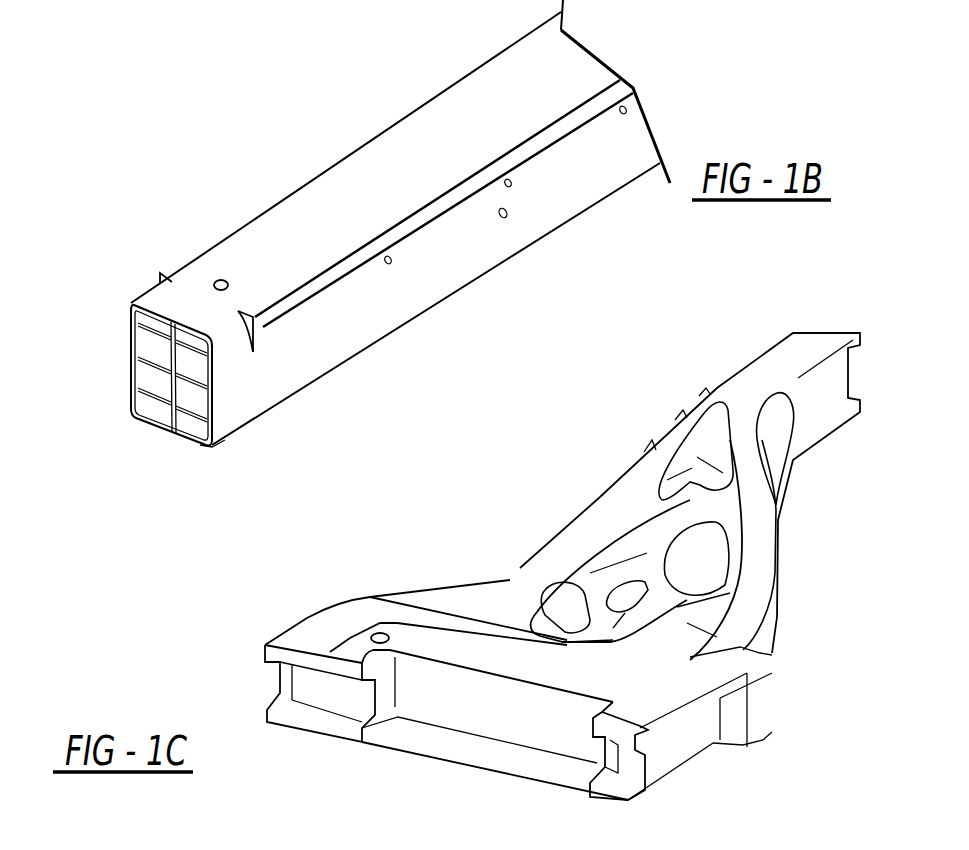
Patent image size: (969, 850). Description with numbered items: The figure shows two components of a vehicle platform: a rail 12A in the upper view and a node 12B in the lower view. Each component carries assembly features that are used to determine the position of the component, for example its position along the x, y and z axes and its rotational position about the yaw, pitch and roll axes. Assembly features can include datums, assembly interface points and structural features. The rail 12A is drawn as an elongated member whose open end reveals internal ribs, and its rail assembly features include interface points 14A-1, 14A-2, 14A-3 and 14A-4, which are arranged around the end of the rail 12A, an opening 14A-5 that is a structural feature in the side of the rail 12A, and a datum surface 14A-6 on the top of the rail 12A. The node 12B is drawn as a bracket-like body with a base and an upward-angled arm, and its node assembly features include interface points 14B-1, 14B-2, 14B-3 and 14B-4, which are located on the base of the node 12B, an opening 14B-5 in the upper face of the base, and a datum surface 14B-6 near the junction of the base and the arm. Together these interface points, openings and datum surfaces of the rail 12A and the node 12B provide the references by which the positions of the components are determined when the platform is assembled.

In FIG. 1B, the rail 12A is at (221, 190).
In FIG. 1B, the interface point 14A-1 is at (129, 299).
In FIG. 1B, the interface point 14A-2 is at (217, 336).
In FIG. 1B, the interface point 14A-3 is at (214, 448).
In FIG. 1B, the interface point 14A-4 is at (129, 414).
In FIG. 1B, the opening 14A-5 is at (219, 280).
In FIG. 1B, the datum surface 14A-6 is at (447, 145).
In FIG. 1C, the node 12B is at (560, 466).
In FIG. 1C, the interface point 14B-1 is at (262, 640).
In FIG. 1C, the interface point 14B-2 is at (369, 663).
In FIG. 1C, the interface point 14B-3 is at (362, 749).
In FIG. 1C, the interface point 14B-4 is at (258, 722).
In FIG. 1C, the opening 14B-5 is at (380, 630).
In FIG. 1C, the datum surface 14B-6 is at (609, 679).